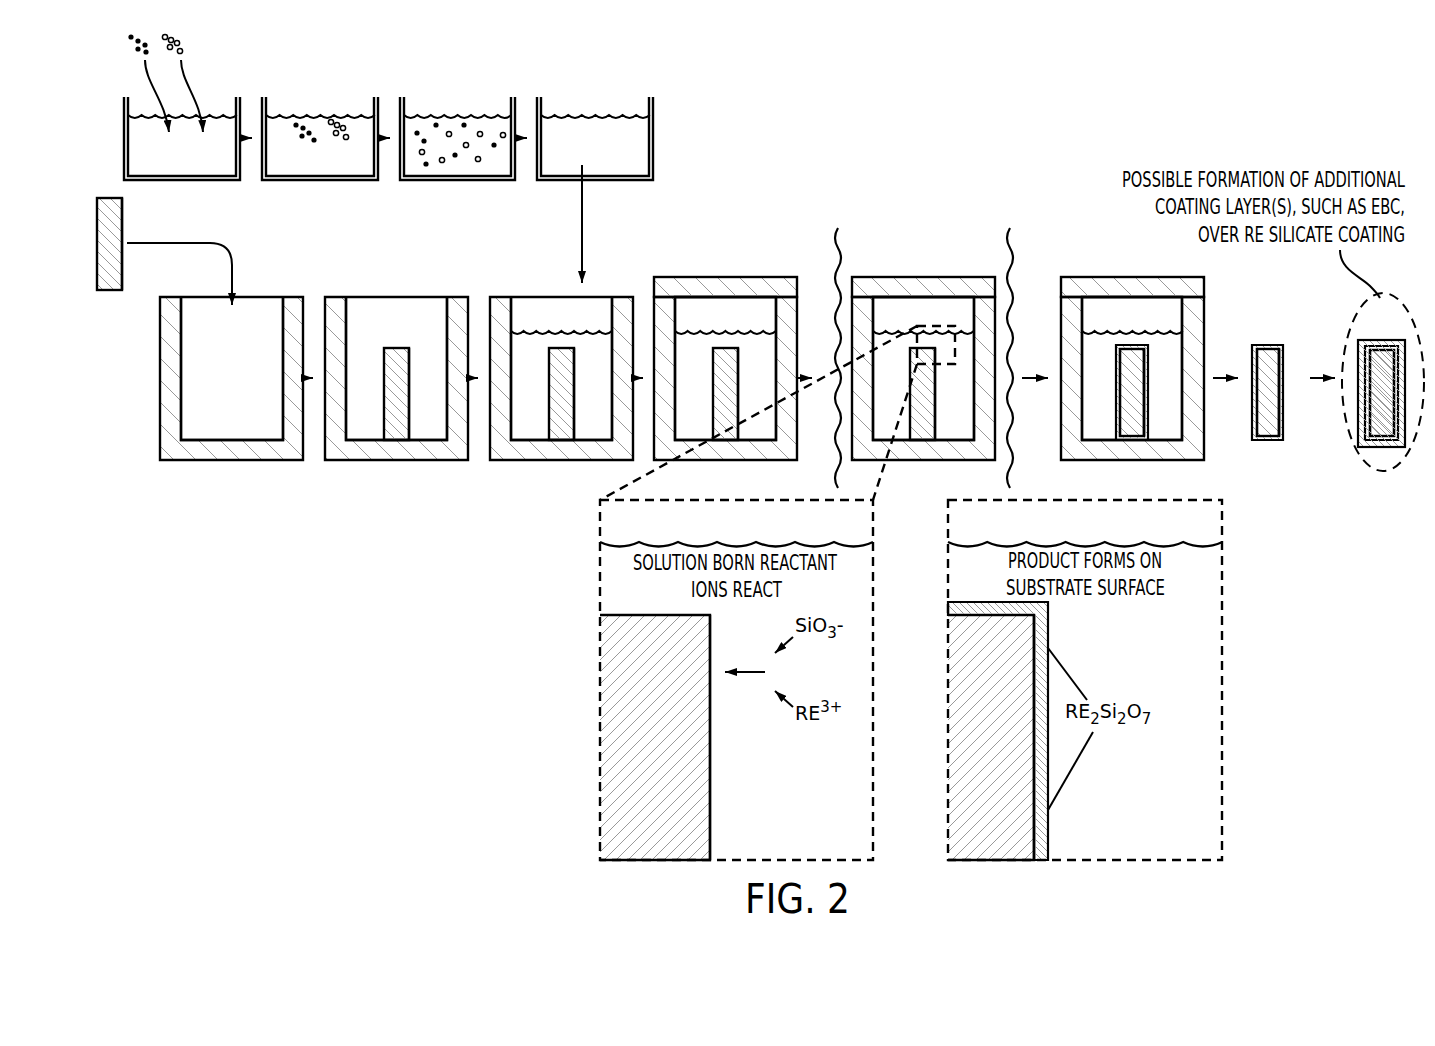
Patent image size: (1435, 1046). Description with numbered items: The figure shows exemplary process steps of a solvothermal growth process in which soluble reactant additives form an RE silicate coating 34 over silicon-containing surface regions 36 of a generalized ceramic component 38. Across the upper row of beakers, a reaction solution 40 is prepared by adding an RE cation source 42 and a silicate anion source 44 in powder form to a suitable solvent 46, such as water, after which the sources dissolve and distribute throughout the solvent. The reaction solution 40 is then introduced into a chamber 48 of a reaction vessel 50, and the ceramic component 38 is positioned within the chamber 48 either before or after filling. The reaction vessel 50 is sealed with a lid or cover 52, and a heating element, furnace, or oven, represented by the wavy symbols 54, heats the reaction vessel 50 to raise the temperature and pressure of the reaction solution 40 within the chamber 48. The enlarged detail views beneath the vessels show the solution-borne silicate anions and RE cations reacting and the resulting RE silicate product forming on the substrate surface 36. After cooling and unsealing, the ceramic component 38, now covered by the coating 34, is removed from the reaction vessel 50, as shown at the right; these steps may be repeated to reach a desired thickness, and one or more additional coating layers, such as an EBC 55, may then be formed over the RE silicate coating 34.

The RE silicate coating 34 is at (1148, 366).
The silicon-containing surface regions 36 is at (122, 229).
The ceramic component 38 is at (108, 231).
The reaction solution 40 is at (368, 171).
The RE cation source 42 is at (126, 34).
The silicate anion source 44 is at (184, 44).
The solvent 46 is at (229, 171).
The chamber 48 is at (276, 329).
The reaction vessel 50 is at (245, 452).
The lid or cover 52 is at (700, 277).
The heating element symbols 54 is at (841, 236).
The EBC 55 is at (1372, 470).